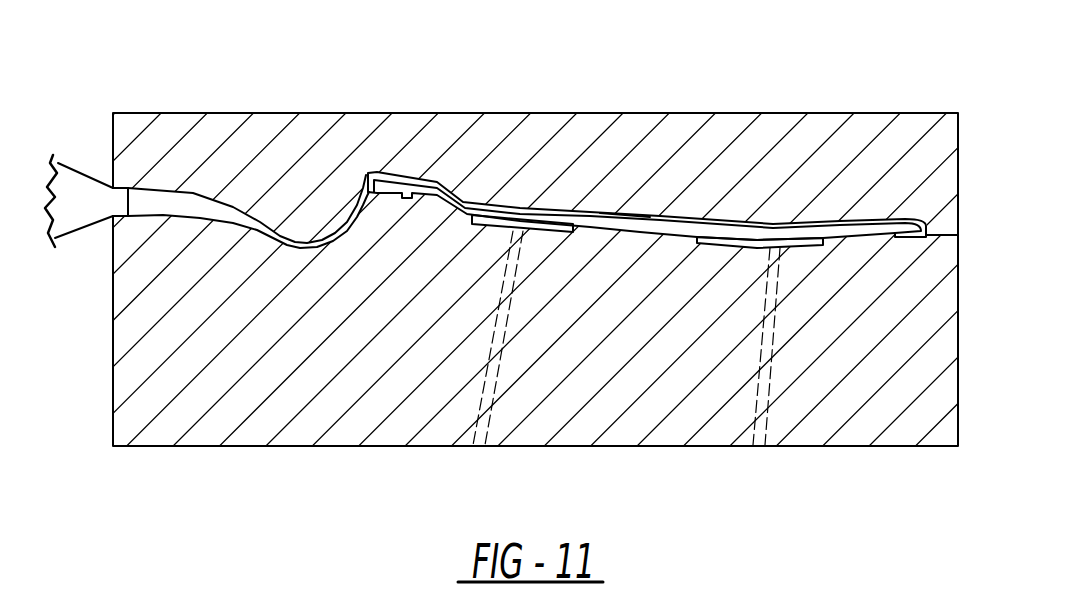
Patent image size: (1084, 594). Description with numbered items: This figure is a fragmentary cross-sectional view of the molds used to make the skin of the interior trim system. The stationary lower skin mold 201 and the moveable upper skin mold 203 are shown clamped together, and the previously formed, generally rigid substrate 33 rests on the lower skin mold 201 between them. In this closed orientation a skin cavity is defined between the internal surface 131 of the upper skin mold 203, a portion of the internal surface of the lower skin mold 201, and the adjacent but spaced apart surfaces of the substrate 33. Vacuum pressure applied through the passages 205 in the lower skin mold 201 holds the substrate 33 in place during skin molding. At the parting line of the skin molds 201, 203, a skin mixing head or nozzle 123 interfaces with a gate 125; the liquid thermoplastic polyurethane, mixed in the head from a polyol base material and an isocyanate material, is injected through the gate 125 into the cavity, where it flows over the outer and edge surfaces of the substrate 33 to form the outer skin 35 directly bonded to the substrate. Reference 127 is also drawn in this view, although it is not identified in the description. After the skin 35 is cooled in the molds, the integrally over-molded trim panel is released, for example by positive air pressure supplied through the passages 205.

The skin mixing head 123 is at (75, 182).
The gate 125 is at (172, 200).
The outer skin 35 is at (380, 165).
The upper skin mold 203 is at (425, 138).
The internal surface of upper skin mold 131 is at (628, 213).
The lower skin mold 201 is at (338, 390).
The substrate 33 is at (712, 228).
The passages 205 is at (498, 365).
The block parting edge 127 is at (943, 237).